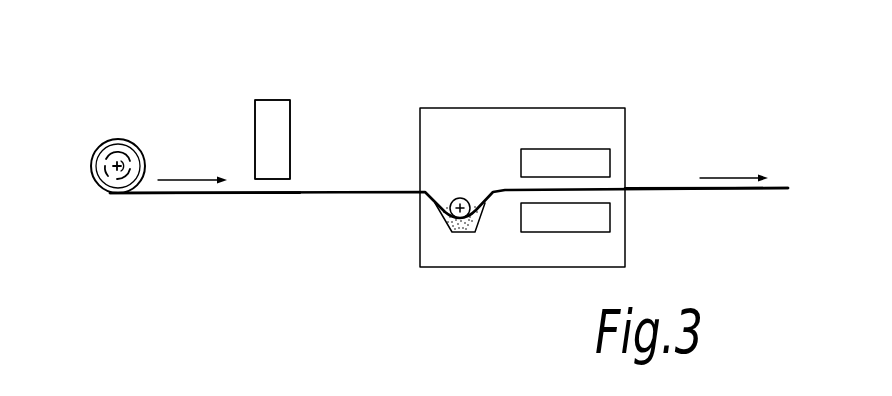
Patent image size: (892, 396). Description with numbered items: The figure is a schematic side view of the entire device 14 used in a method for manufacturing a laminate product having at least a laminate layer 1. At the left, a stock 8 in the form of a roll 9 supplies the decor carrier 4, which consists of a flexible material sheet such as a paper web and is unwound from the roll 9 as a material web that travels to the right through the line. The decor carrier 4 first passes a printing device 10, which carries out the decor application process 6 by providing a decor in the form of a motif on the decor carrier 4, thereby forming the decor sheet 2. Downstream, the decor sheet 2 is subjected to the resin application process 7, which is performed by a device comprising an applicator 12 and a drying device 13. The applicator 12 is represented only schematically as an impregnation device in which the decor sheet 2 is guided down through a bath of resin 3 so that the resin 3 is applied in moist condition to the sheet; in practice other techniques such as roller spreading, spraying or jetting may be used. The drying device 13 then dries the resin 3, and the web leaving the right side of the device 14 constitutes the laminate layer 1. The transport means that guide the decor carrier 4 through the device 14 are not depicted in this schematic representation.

The laminate layer 1 is at (667, 191).
The decor sheet 2 is at (331, 194).
The resin 3 is at (478, 221).
The decor carrier 4 is at (221, 195).
The decor application process 6 is at (268, 90).
The resin application process 7 is at (520, 96).
The stock 8 is at (132, 142).
The roll 9 is at (107, 142).
The printing device 10 is at (282, 132).
The applicator 12 is at (447, 247).
The drying device 13 is at (559, 248).
The device 14 is at (680, 42).